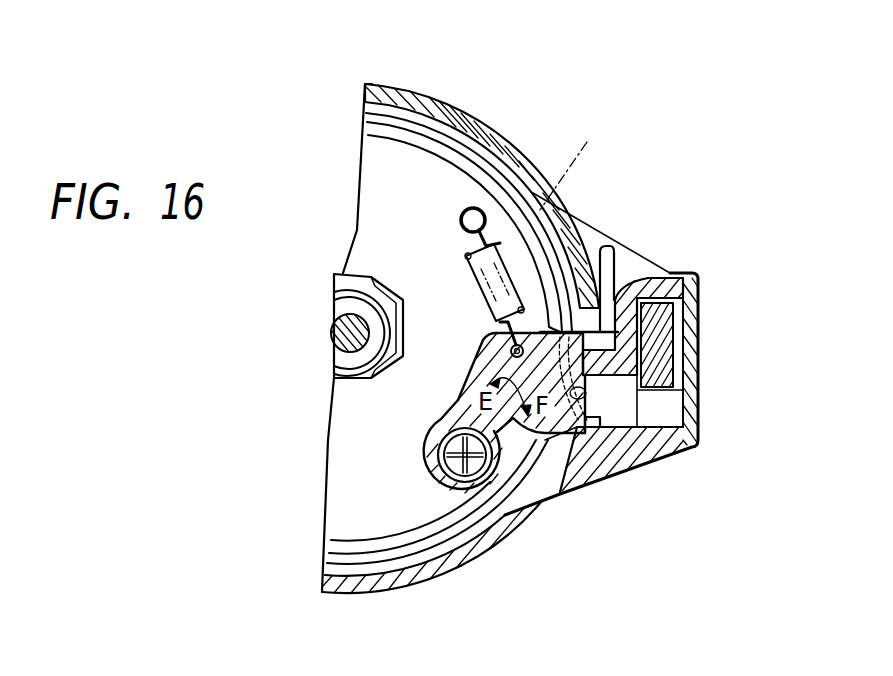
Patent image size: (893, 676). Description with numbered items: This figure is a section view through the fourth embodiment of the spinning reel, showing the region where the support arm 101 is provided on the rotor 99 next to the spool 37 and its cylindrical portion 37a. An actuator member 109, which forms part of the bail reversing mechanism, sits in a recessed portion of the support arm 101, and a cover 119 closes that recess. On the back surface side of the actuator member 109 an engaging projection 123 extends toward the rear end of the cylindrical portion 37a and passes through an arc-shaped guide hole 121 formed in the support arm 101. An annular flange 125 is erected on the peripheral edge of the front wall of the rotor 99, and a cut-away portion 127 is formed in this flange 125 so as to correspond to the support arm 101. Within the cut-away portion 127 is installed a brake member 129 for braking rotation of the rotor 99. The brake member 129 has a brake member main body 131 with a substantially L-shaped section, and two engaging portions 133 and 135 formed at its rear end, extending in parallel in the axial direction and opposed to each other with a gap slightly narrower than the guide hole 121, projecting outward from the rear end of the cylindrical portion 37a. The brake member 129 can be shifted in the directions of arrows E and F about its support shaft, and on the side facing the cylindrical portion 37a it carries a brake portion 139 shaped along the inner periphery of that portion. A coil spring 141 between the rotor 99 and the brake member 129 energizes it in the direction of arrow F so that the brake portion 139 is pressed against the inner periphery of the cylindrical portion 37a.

The spool 37 is at (403, 87).
The cylindrical portion 37a is at (457, 108).
The rotor 99 is at (365, 167).
The support arm 101 is at (620, 257).
The actuator member 109 is at (662, 347).
The cover 119 is at (697, 312).
The arc-shaped guide hole 121 is at (633, 415).
The engaging projection 123 is at (633, 393).
The annular flange 125 is at (458, 160).
The cut-away portion 127 is at (578, 490).
The brake member 129 is at (458, 400).
The brake member main body 131 is at (503, 484).
The engaging portion 133 is at (620, 297).
The engaging portion 135 is at (582, 472).
The brake portion 139 is at (565, 400).
The coil spring 141 is at (545, 229).